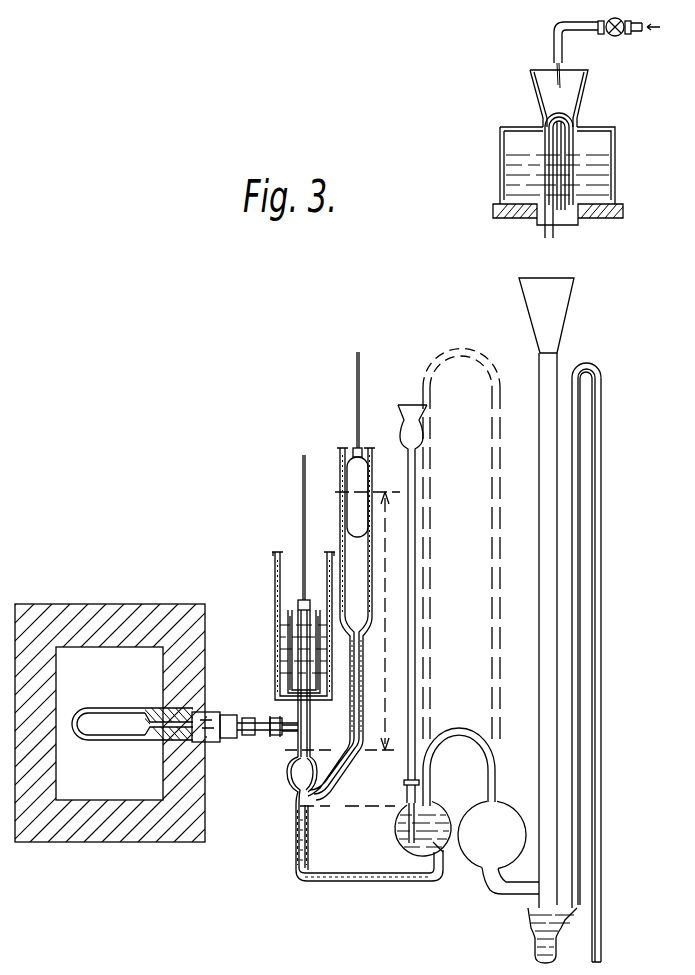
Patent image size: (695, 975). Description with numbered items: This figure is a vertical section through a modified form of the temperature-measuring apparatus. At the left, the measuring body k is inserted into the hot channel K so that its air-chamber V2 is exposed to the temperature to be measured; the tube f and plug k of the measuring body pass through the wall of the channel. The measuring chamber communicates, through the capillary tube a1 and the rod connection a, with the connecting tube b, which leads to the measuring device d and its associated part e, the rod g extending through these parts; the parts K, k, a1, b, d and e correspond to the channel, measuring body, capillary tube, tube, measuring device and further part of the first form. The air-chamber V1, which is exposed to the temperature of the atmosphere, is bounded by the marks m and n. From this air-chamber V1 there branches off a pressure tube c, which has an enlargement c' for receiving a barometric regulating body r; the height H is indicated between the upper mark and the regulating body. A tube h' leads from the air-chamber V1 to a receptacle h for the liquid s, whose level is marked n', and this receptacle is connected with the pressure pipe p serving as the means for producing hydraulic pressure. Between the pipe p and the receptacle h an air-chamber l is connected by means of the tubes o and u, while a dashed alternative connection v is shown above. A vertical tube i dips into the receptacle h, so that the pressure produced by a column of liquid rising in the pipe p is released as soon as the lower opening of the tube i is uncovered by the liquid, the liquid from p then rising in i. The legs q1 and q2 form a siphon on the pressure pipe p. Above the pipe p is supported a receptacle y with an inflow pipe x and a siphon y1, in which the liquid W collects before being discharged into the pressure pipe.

The hot channel K is at (223, 714).
The tube / liquid f is at (112, 728).
The air-chamber exposed to the temperature to be measured V2 is at (79, 774).
The measuring body k is at (162, 740).
The capillary tube a1 is at (210, 722).
The connecting rod a is at (259, 732).
The measuring device part e is at (296, 626).
The measuring device d is at (298, 680).
The rod g is at (302, 486).
The connecting tube b is at (303, 683).
The mark m is at (340, 741).
The air-chamber exposed to the temperature of the atmosphere V1 is at (287, 772).
The pressure tube c is at (341, 624).
The enlargement c' is at (352, 605).
The barometric regulating body r is at (357, 444).
The height H is at (367, 621).
The mark n is at (347, 805).
The tube h' is at (369, 843).
The receptacle h is at (424, 818).
The level mark n' is at (384, 831).
The liquid s is at (440, 850).
The vertical tube i is at (416, 635).
The dashed tube v is at (461, 546).
The tube u is at (459, 755).
The air-chamber l is at (492, 834).
The tube o is at (510, 893).
The pressure pipe p is at (540, 576).
The siphon q1 is at (573, 604).
The siphon q2 is at (600, 605).
The inflow pipe x is at (607, 53).
The receptacle y is at (546, 137).
The siphon y1 is at (573, 143).
The liquid W is at (513, 185).